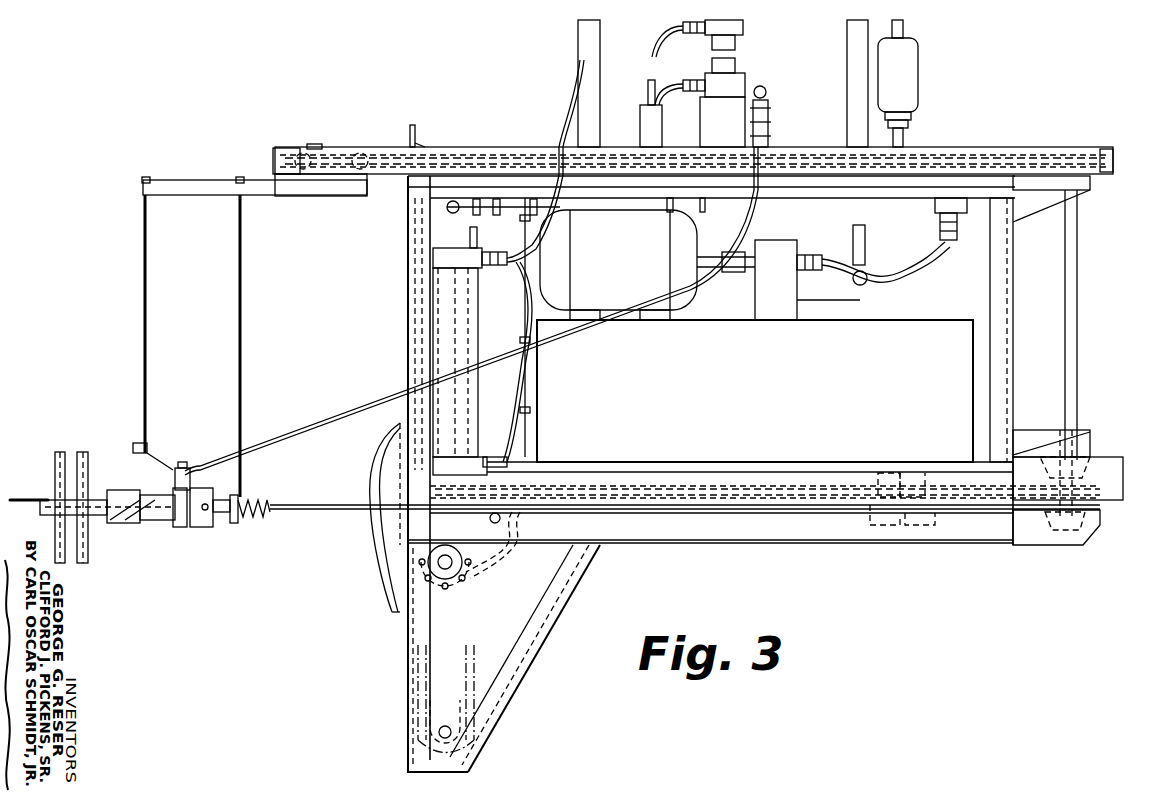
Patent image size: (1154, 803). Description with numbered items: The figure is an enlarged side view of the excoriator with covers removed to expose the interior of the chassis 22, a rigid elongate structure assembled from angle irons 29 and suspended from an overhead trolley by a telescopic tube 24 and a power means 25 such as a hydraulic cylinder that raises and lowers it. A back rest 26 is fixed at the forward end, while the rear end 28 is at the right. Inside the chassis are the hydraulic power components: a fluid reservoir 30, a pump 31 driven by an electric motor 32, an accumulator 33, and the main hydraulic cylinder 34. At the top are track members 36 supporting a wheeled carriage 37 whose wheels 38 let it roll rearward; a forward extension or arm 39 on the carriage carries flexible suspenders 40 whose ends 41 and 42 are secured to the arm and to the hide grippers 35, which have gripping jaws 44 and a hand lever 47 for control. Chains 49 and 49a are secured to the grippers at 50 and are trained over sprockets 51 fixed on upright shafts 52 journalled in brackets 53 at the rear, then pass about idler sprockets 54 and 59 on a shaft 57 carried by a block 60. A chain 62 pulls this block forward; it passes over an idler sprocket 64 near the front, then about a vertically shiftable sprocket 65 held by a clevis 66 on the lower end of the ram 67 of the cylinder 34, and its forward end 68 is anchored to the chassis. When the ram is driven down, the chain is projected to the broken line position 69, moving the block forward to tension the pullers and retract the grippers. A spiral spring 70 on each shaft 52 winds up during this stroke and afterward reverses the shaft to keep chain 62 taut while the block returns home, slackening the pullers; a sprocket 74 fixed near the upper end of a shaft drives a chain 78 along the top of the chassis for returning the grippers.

The chassis 22 is at (835, 543).
The telescopic tube 24 is at (578, 50).
The power means 25 is at (745, 40).
The back rest 26 is at (400, 491).
The rear end 28 is at (1013, 303).
The angle irons 29 is at (408, 203).
The fluid reservoir 30 is at (900, 326).
The pump 31 is at (757, 278).
The electric motor 32 is at (685, 290).
The accumulator 33 is at (905, 92).
The main hydraulic cylinder 34 is at (462, 430).
The hide grippers 35 is at (130, 523).
The track members 36 is at (274, 158).
The carriage 37 is at (320, 147).
The wheels 38 is at (303, 153).
The forward extension or arm 39 is at (186, 180).
The flexible suspenders 40 is at (147, 352).
The end of suspender 41 is at (148, 182).
The end of suspender 42 is at (140, 447).
The gripping jaws 44 is at (84, 563).
The hand lever 47 is at (165, 522).
The chain 49 is at (957, 470).
The chain 49a is at (685, 519).
The chain attachment 50 is at (232, 523).
The sprockets 51 is at (1100, 502).
The upright shafts 52 is at (1077, 363).
The brackets 53 is at (1076, 432).
The sprocket 54 is at (880, 469).
The shaft 57 is at (920, 470).
The sprocket 59 is at (926, 516).
The block 60 is at (878, 520).
The chain 62 is at (722, 470).
The idler sprocket 64 is at (513, 540).
The vertically shiftable sprocket 65 is at (463, 574).
The clevis 66 is at (463, 562).
The piston rod or ram 67 is at (465, 448).
The forward end of chain 68 is at (378, 521).
The broken line position 69 is at (462, 725).
The spiral spring 70 is at (1090, 445).
The sprocket 74 is at (1072, 164).
The chain 78 is at (940, 162).